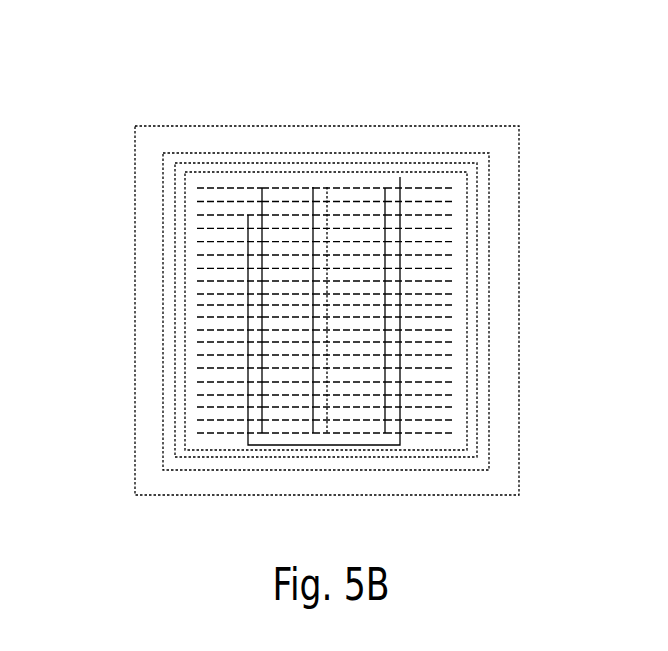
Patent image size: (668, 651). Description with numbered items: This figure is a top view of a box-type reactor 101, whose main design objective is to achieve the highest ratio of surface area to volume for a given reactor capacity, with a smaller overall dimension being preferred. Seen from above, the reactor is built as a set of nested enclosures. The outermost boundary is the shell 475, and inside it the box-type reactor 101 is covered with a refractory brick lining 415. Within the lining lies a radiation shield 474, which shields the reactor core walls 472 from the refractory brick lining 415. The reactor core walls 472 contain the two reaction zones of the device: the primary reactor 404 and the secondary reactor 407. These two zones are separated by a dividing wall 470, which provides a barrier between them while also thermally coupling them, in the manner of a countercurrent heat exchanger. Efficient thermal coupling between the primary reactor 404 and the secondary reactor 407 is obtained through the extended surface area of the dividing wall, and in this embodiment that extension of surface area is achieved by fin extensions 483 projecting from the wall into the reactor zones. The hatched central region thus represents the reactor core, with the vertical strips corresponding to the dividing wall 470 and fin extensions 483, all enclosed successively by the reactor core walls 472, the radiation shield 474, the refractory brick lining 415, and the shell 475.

The box-type reactor 101 is at (401, 58).
The refractory brick lining 415 is at (258, 130).
The reactor core walls 472 is at (250, 180).
The primary reactor 404 is at (288, 208).
The dividing wall 470 is at (320, 283).
The secondary reactor 407 is at (352, 335).
The fin extensions 483 is at (433, 375).
The radiation shield 474 is at (166, 362).
The shell 475 is at (530, 403).